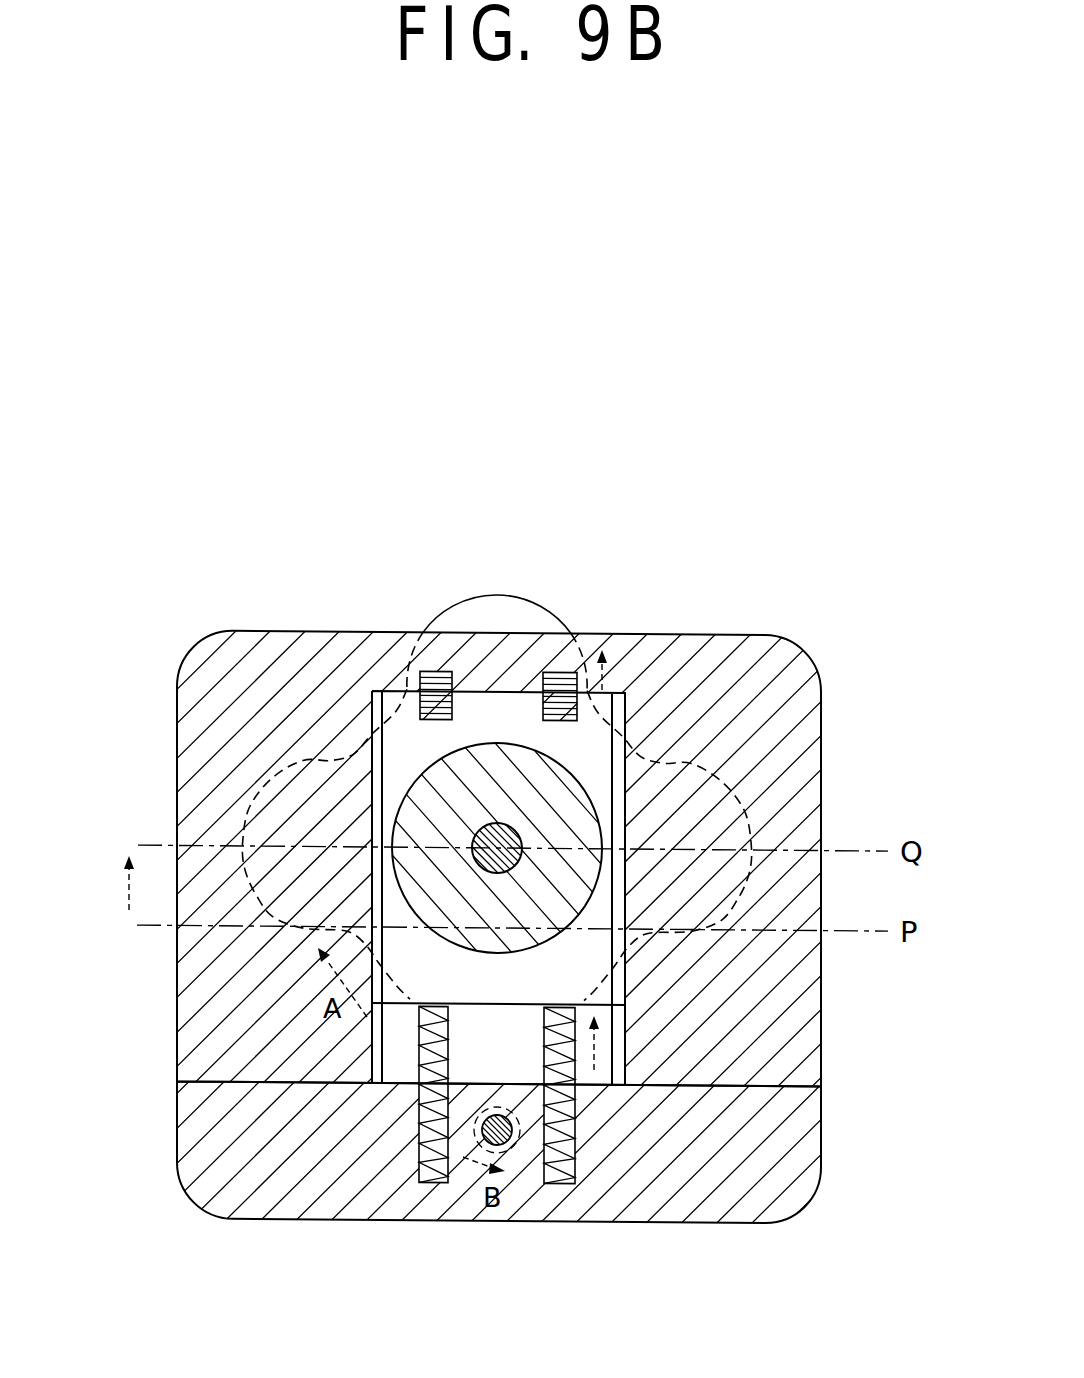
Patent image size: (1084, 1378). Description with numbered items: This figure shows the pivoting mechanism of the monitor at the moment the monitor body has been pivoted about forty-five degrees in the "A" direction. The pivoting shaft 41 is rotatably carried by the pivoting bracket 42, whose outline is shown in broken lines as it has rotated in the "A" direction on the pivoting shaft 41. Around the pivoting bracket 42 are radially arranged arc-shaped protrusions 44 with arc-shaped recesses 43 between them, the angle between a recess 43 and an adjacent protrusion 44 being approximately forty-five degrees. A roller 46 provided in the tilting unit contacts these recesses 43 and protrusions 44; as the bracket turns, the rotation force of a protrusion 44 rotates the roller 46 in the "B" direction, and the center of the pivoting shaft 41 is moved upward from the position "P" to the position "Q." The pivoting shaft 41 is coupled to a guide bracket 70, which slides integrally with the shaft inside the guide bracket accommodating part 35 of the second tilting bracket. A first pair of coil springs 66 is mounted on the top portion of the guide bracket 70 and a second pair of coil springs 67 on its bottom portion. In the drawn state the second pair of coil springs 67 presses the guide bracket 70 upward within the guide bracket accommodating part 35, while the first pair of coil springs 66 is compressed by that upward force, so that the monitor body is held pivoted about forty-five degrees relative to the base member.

The guide bracket accommodating part 35 is at (603, 1055).
The pivoting shaft 41 is at (573, 787).
The pivoting bracket 42 is at (246, 813).
The recess 43 is at (410, 1005).
The protrusion 44 is at (518, 1057).
The roller 46 is at (487, 1147).
The first pair of coil springs 66 is at (578, 688).
The second pair of coil springs 67 is at (577, 1150).
The guide bracket 70 is at (403, 740).